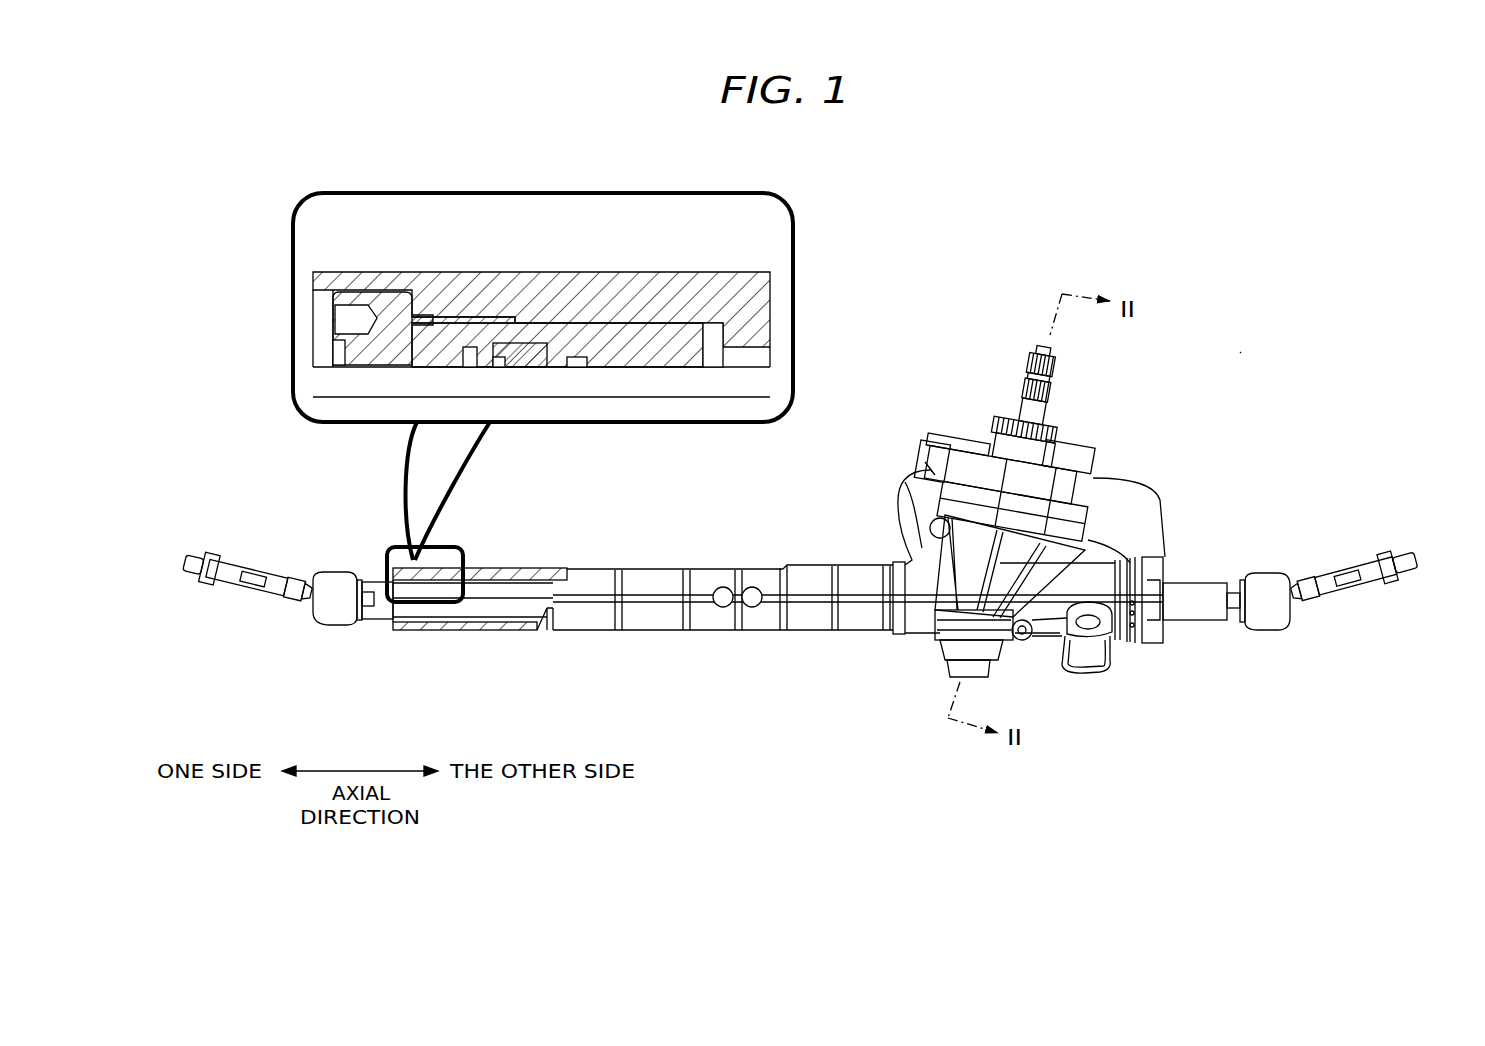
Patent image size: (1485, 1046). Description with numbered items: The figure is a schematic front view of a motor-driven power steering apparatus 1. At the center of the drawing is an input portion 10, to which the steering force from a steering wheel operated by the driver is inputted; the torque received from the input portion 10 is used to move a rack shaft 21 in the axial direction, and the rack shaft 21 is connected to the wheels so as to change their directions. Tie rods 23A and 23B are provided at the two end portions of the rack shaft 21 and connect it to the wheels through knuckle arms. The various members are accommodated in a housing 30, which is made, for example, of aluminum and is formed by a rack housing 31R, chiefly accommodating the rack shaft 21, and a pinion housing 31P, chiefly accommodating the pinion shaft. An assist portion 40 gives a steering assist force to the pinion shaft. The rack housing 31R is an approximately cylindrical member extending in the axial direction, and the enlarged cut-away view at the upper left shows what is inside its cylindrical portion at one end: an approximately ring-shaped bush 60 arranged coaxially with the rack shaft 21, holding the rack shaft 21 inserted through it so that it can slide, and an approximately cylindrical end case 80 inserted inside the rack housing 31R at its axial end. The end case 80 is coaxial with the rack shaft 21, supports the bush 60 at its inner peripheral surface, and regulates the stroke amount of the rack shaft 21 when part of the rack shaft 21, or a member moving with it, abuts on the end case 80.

The motor-driven power steering apparatus 1 is at (1249, 349).
The input portion 10 is at (1064, 372).
The rack shaft 21 is at (750, 353).
The tie rod 23A is at (194, 553).
The tie rod 23B is at (1407, 555).
The housing 30 is at (785, 435).
The pinion housing 31P is at (928, 470).
The rack housing 31R is at (400, 271).
The assist portion 40 is at (1148, 488).
The bush 60 is at (520, 340).
The end case 80 is at (463, 313).